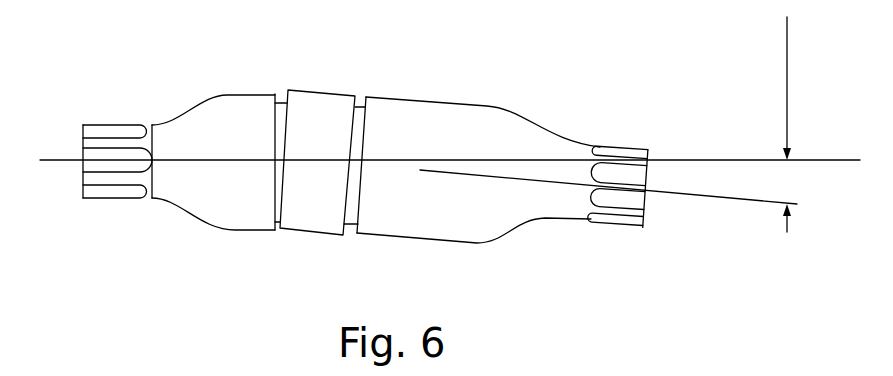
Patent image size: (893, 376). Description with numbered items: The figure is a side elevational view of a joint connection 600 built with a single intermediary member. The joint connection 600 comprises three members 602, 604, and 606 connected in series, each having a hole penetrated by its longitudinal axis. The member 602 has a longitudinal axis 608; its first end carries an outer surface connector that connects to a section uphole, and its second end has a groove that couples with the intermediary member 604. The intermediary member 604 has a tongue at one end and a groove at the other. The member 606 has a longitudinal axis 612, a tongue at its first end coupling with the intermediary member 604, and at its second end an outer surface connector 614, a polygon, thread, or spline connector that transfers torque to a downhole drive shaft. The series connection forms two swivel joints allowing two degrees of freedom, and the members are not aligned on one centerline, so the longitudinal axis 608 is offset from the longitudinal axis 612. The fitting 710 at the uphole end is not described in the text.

The joint connection 600 is at (603, 62).
The member 602 is at (247, 108).
The intermediary member 604 is at (333, 105).
The member 606 is at (425, 110).
The longitudinal axis 608 is at (180, 162).
The longitudinal axis 612 is at (545, 185).
The outer surface connector 614 is at (628, 200).
The proximal fitting 710 is at (113, 192).